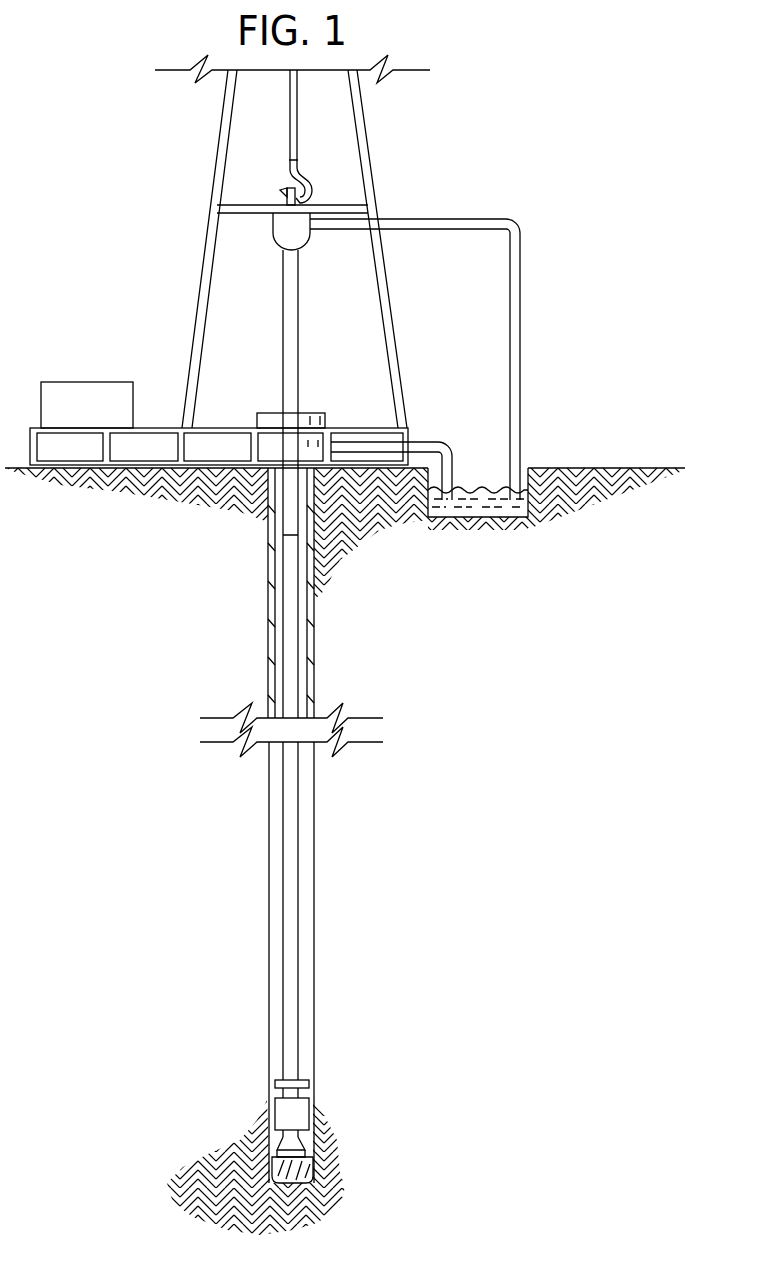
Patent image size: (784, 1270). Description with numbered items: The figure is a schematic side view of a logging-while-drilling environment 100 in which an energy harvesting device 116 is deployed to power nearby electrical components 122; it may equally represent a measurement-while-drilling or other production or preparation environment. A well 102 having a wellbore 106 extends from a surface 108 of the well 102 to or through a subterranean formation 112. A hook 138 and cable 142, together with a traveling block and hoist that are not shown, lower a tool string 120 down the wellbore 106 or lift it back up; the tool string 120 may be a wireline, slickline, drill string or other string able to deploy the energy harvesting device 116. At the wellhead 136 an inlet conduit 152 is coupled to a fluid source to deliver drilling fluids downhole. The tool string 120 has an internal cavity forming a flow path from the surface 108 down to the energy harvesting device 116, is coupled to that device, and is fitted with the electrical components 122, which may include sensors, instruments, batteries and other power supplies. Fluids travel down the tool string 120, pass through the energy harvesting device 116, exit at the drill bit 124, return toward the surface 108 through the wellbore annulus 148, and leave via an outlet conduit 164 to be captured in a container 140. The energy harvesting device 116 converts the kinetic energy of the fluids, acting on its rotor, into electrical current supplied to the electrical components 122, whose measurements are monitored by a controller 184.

The LWD environment 100 is at (122, 224).
The well 102 is at (322, 400).
The wellbore 106 is at (316, 895).
The surface 108 is at (622, 467).
The subterranean formation 112 is at (575, 917).
The energy harvesting device 116 is at (305, 1107).
The tool string 120 is at (300, 812).
The electrical components 122 is at (283, 1073).
The drill bit 124 is at (312, 1158).
The wellhead 136 is at (268, 412).
The hook 138 is at (307, 188).
The container 140 is at (498, 518).
The cable 142 is at (289, 151).
The wellbore annulus 148 is at (275, 970).
The inlet conduit 152 is at (486, 218).
The outlet conduit 164 is at (420, 440).
The controller 184 is at (88, 381).